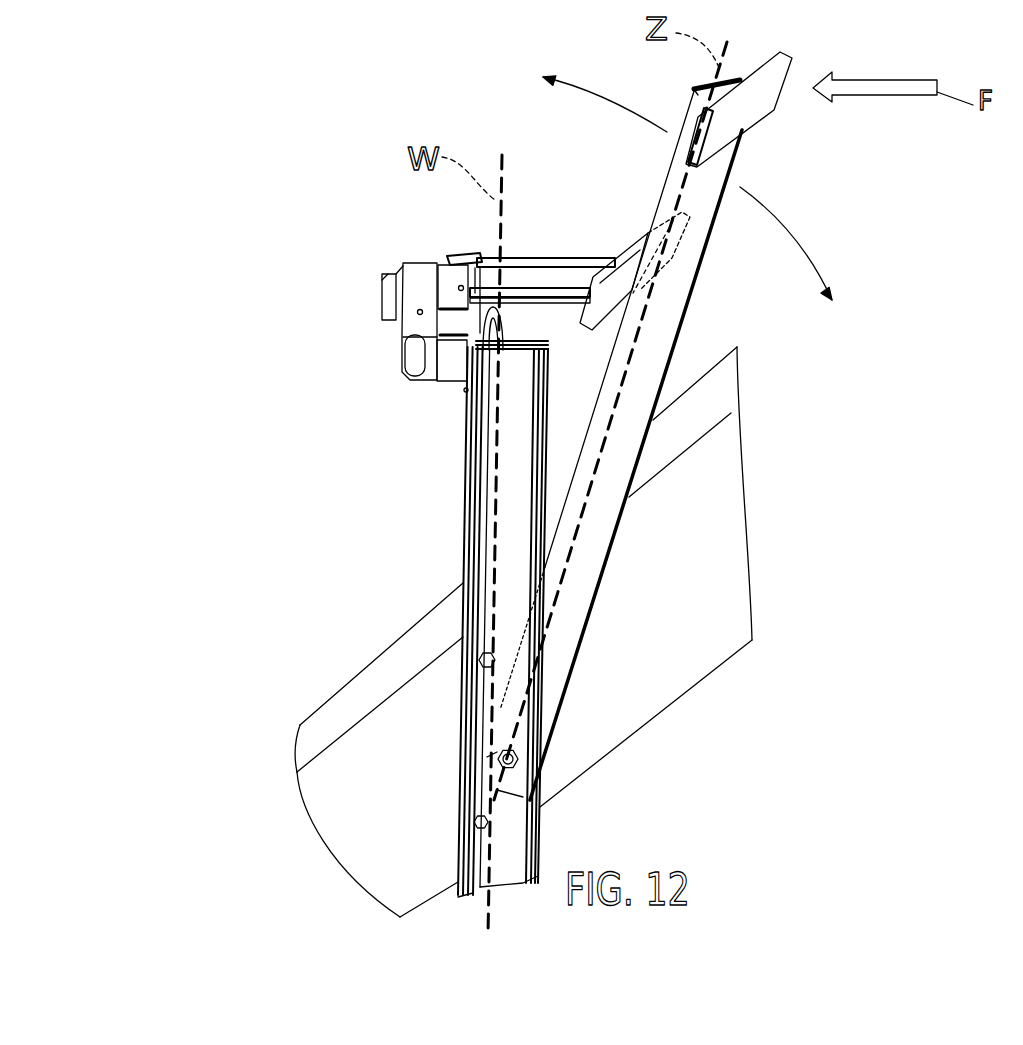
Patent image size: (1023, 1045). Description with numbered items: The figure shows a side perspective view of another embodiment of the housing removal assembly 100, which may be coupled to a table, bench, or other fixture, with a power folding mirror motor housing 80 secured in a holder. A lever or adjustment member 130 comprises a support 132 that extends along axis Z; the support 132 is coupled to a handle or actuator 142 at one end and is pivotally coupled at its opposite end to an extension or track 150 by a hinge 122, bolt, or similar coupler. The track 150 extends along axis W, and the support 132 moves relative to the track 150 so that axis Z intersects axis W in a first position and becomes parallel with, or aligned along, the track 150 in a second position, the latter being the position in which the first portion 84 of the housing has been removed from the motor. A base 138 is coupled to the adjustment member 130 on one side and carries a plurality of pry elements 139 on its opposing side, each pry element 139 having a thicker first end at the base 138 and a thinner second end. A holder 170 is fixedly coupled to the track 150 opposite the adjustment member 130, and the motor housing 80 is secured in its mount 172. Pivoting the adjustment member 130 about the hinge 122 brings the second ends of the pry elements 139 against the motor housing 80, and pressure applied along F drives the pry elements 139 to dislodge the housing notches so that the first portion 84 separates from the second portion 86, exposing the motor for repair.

The housing removal assembly 100 is at (257, 123).
The motor housing 80 is at (365, 308).
The first portion 84 is at (388, 268).
The second portion 86 is at (445, 258).
The pry elements 139 is at (562, 260).
The base 138 is at (640, 242).
The actuator 142 is at (757, 108).
The adjustment member 130 is at (628, 507).
The support 132 is at (595, 550).
The mount 172 is at (560, 343).
The holder 170 is at (462, 387).
The track 150 is at (460, 506).
The hinge 122 is at (497, 758).